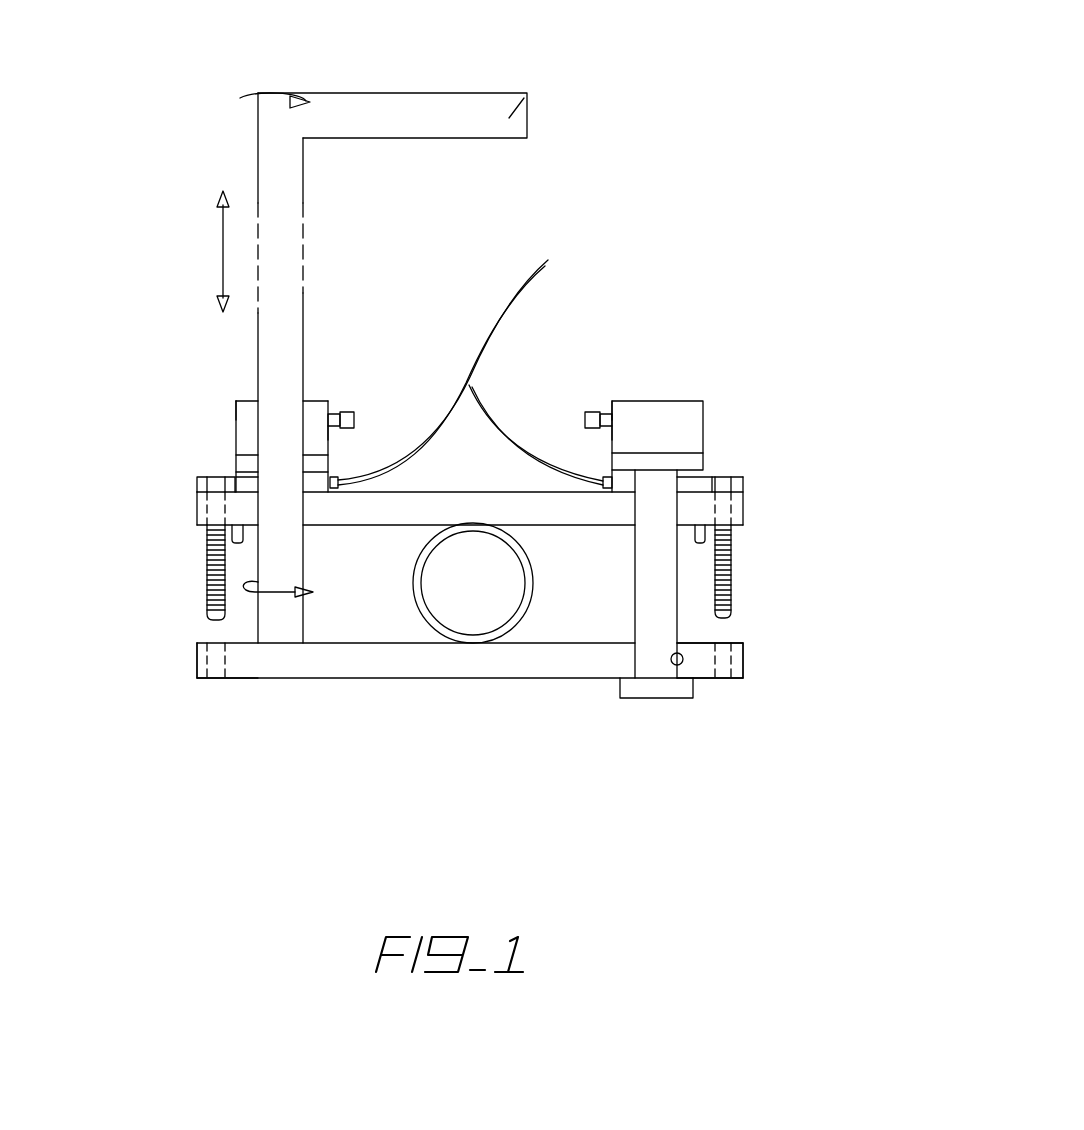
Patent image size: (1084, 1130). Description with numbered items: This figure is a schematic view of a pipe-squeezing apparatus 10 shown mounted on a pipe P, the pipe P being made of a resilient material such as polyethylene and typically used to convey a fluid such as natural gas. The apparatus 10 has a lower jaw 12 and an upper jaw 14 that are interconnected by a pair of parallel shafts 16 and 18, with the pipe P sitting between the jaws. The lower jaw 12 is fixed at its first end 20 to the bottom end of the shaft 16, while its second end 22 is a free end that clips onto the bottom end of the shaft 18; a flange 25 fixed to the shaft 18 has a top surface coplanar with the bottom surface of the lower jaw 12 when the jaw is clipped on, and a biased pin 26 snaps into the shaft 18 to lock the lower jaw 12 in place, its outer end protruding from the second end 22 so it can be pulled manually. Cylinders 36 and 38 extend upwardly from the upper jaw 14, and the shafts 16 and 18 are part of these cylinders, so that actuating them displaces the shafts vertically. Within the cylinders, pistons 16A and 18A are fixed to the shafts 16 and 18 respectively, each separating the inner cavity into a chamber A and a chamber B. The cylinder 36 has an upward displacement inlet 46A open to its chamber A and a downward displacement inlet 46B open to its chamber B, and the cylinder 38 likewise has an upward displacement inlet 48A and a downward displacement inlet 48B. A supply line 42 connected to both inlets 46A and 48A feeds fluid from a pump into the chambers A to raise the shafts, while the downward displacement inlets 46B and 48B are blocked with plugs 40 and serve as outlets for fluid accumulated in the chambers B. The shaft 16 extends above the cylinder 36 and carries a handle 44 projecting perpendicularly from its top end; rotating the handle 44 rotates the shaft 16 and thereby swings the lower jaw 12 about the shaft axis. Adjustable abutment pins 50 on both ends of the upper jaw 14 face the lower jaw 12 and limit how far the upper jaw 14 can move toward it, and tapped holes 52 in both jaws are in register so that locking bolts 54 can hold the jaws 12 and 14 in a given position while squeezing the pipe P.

The pipe-squeezing apparatus 10 is at (790, 350).
The lower jaw 12 is at (380, 672).
The upper jaw 14 is at (743, 503).
The shaft 16 is at (288, 314).
The piston 16A is at (243, 463).
The shaft 18 is at (660, 603).
The piston 18A is at (682, 465).
The first end 20 is at (238, 678).
The second end 22 is at (745, 650).
The flange 25 is at (655, 698).
The pin 26 is at (683, 662).
The cylinder 36 is at (322, 386).
The cylinder 38 is at (678, 400).
The plugs 40 is at (355, 420).
The supply line 42 is at (526, 272).
The handle 44 is at (528, 93).
The upward displacement inlet 46A is at (339, 488).
The downward displacement inlet 46B is at (337, 410).
The upward displacement inlet 48A is at (605, 490).
The downward displacement inlet 48B is at (600, 411).
The adjustable abutment pins 50 is at (238, 545).
The tapped holes 52 is at (187, 513).
The locking bolts 54 is at (205, 570).
The chamber A is at (203, 477).
The chamber B is at (243, 427).
The pipe P is at (530, 590).